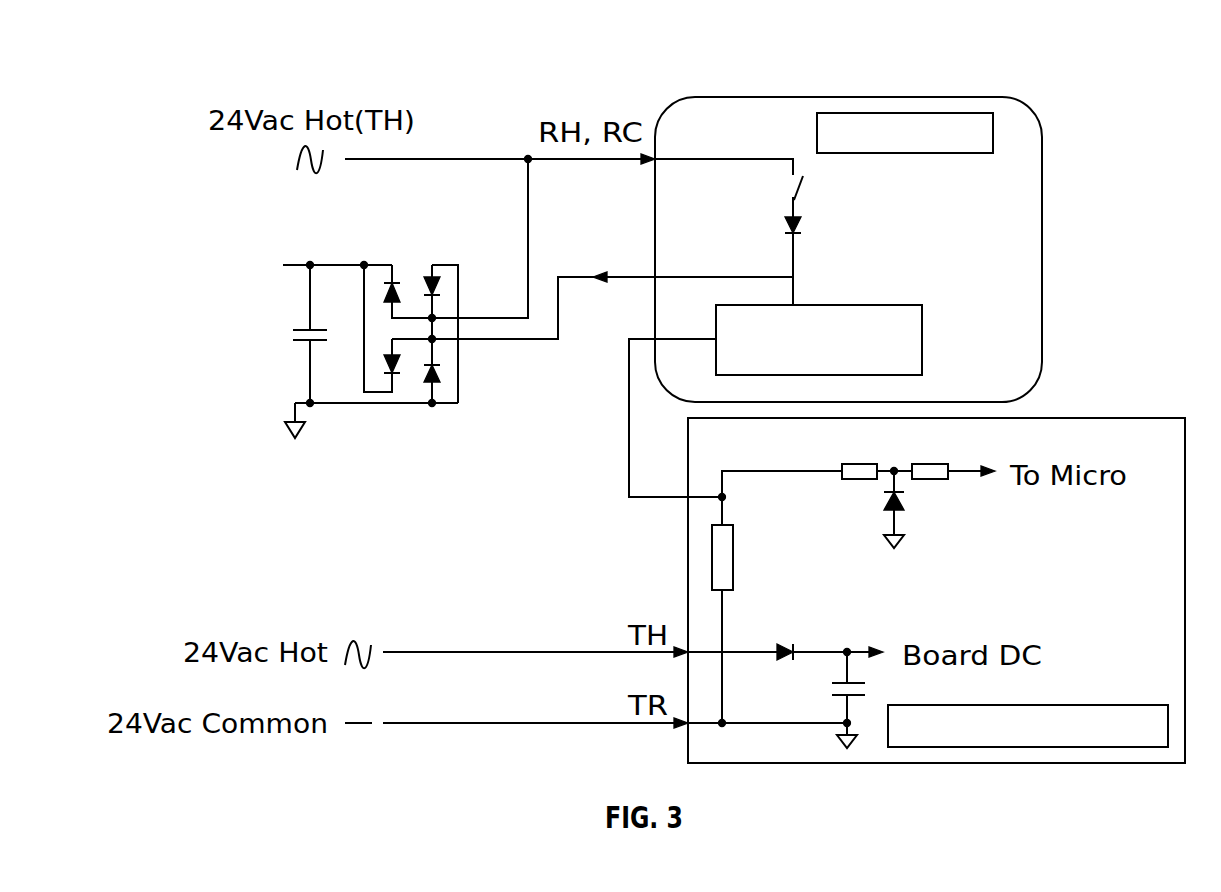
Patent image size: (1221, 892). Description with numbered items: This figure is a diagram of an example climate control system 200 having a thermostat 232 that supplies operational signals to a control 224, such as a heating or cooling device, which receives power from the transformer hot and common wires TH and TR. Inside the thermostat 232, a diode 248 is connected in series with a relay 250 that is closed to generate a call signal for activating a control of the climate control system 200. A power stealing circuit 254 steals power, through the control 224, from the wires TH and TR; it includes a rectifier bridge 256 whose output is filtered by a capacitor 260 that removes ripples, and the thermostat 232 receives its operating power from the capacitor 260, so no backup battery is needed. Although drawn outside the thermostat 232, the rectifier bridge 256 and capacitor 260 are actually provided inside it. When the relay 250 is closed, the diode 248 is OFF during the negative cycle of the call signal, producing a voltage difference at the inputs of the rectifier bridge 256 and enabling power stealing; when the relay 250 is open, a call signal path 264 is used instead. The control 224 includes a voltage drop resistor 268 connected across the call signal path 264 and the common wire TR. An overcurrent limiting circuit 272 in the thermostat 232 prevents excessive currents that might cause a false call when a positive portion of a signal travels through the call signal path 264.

The climate control system 200 is at (340, 780).
The control 224 is at (1118, 765).
The thermostat 232 is at (721, 97).
The diode 248 is at (781, 228).
The relay 250 is at (801, 187).
The power stealing circuit 254 is at (360, 472).
The rectifier bridge 256 is at (402, 252).
The capacitor 260 is at (272, 335).
The call signal path 264 is at (629, 415).
The voltage drop resistor 268 is at (712, 557).
The overcurrent limiting circuit 272 is at (858, 305).